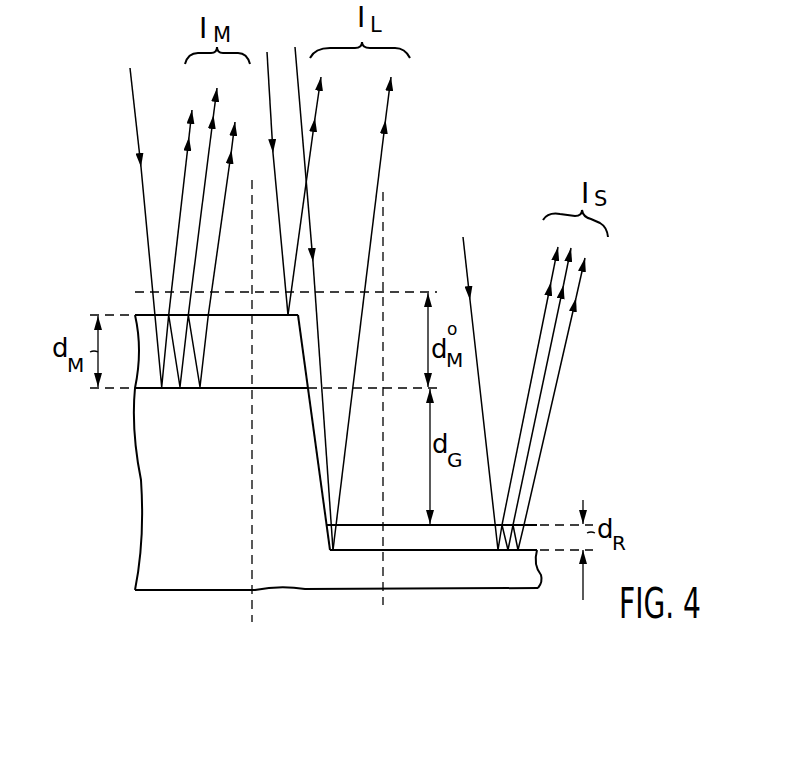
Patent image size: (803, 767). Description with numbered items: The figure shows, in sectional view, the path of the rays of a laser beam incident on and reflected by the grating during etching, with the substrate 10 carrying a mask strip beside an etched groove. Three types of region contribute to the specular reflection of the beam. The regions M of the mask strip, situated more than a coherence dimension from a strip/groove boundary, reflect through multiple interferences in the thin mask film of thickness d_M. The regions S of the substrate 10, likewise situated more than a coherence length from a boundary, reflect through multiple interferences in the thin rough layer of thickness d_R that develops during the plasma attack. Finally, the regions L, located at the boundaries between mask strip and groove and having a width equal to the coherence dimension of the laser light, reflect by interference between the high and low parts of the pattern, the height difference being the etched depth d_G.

The optical recording medium substrate 10 is at (168, 537).
The region of the mask strip M is at (195, 598).
The boundary region between mask strip and groove L is at (304, 594).
The region of the substrate S is at (435, 596).